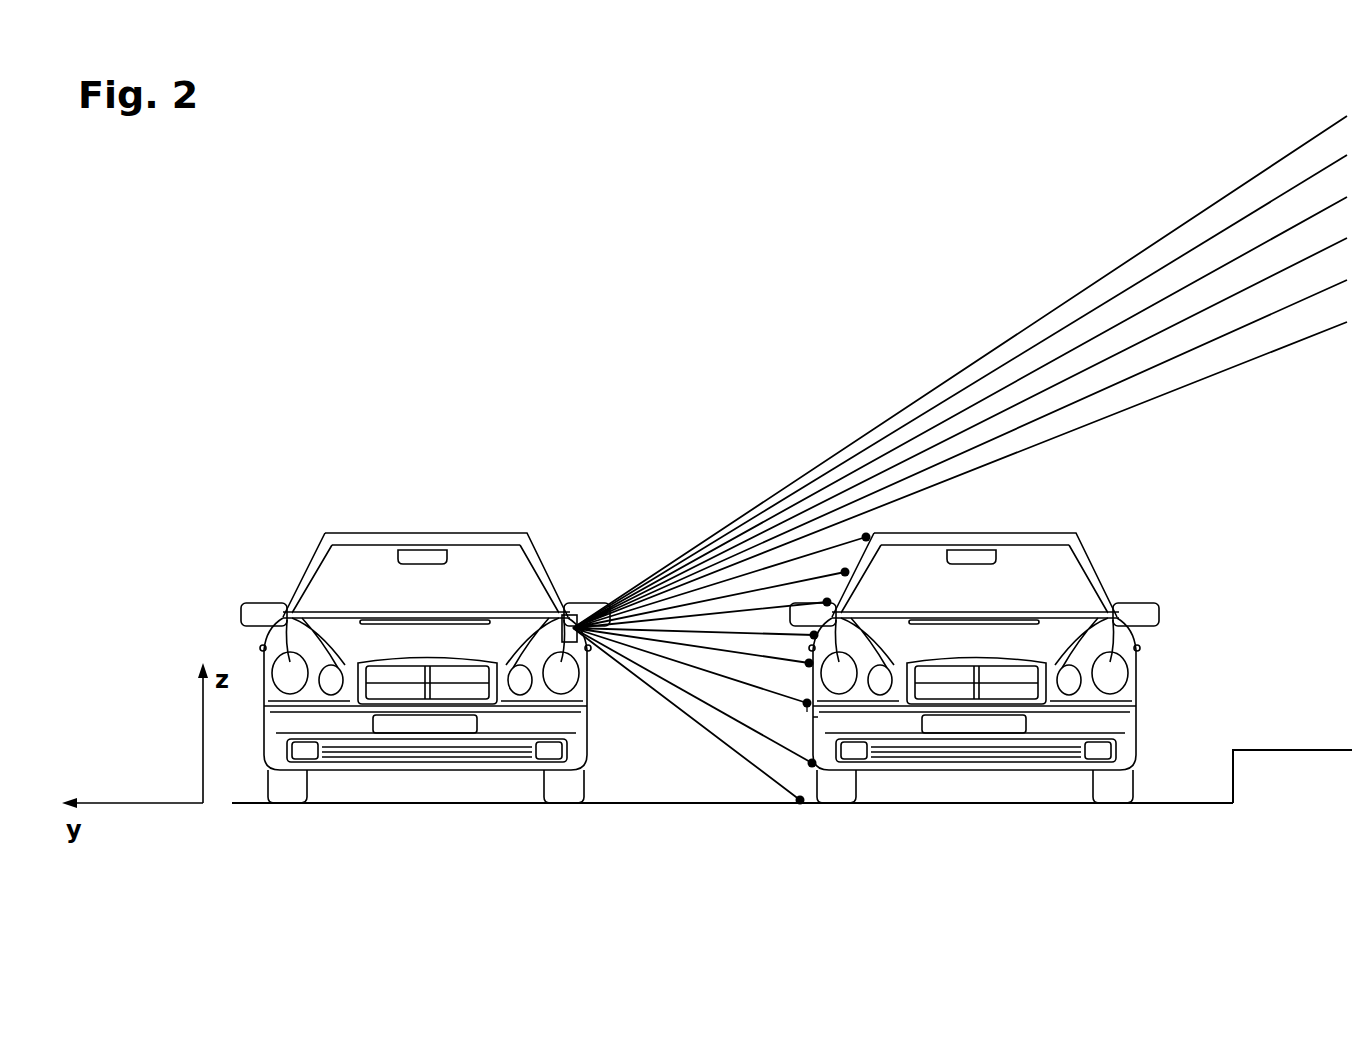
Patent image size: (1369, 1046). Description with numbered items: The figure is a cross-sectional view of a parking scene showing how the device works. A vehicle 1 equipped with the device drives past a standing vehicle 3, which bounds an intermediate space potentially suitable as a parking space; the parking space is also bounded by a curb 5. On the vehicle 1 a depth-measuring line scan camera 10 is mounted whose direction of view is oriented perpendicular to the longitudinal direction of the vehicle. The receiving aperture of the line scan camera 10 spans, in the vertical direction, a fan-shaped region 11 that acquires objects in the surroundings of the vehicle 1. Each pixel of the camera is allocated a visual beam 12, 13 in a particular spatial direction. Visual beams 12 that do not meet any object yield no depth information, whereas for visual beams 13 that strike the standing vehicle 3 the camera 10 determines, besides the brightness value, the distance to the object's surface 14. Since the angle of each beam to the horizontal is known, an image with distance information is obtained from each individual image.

The vehicle 1 is at (415, 530).
The standing vehicle 3 is at (1087, 562).
The curb 5 is at (1293, 768).
The depth-measuring line scan camera 10 is at (568, 615).
The fan-shaped region 11 is at (1003, 282).
The visual beam 12 is at (1208, 236).
The visual beam 13 is at (735, 725).
The object's surface 14 is at (830, 717).